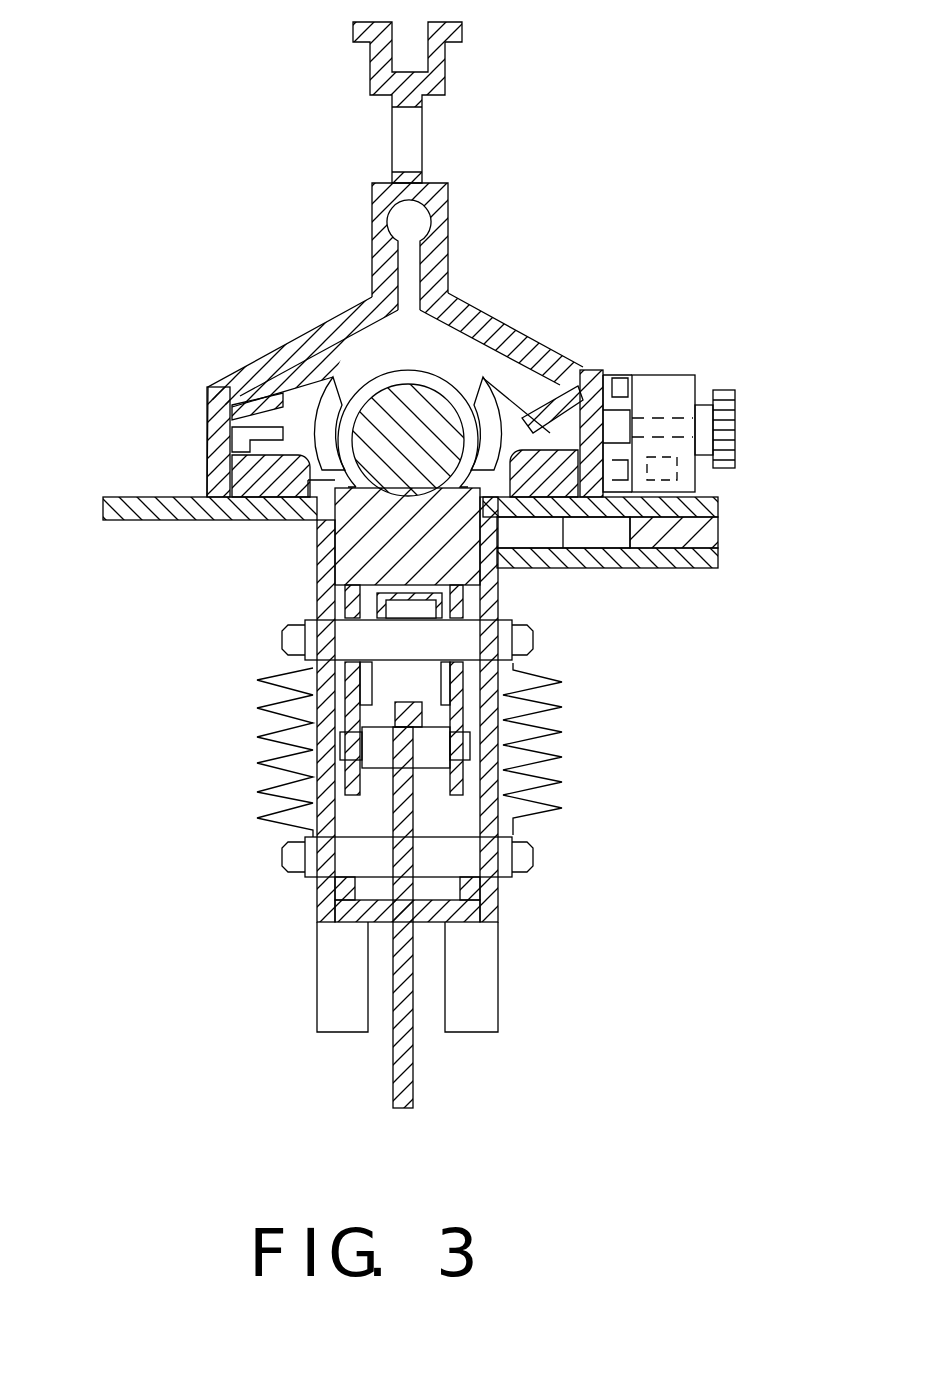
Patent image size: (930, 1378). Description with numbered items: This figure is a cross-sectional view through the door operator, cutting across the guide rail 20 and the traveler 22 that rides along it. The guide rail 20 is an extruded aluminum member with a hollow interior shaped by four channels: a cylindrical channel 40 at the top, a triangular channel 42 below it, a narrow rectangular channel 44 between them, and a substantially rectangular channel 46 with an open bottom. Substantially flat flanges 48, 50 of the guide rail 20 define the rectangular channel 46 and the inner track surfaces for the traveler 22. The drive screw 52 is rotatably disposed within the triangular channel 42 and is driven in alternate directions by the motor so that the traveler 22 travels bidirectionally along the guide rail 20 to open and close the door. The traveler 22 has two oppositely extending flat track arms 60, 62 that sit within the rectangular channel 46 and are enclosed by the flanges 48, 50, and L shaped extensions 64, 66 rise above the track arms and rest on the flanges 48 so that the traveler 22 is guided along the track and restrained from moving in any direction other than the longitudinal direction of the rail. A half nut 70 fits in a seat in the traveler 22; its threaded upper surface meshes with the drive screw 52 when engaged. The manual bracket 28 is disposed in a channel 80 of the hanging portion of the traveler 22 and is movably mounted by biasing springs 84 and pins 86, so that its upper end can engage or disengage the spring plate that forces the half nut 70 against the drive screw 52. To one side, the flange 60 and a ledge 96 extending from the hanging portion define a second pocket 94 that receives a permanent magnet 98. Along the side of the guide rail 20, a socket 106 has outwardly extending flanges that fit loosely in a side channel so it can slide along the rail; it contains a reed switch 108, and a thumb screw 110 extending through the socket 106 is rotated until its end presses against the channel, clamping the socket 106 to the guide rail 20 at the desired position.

The guide rail 20 is at (457, 305).
The traveler 22 is at (315, 553).
The manual bracket 28 is at (415, 1070).
The cylindrical channel 40 is at (447, 207).
The triangular channel 42 is at (462, 322).
The narrow rectangular channel 44 is at (423, 250).
The rectangular channel 46 is at (233, 453).
The flange 48 is at (253, 487).
The flange 50 is at (233, 372).
The drive screw 52 is at (372, 392).
The flat track arm 60 is at (703, 500).
The flat track arm 62 is at (118, 505).
The L shaped extension 64 is at (283, 427).
The L shaped extension 66 is at (575, 430).
The half nut 70 is at (455, 555).
The channel 80 is at (380, 1005).
The biasing spring 84 is at (260, 762).
The pin 86 is at (282, 640).
The second pocket 94 is at (615, 535).
The ledge 96 is at (713, 562).
The permanent magnet 98 is at (705, 537).
The socket 106 is at (662, 393).
The reed switch 108 is at (667, 467).
The thumb screw 110 is at (735, 410).